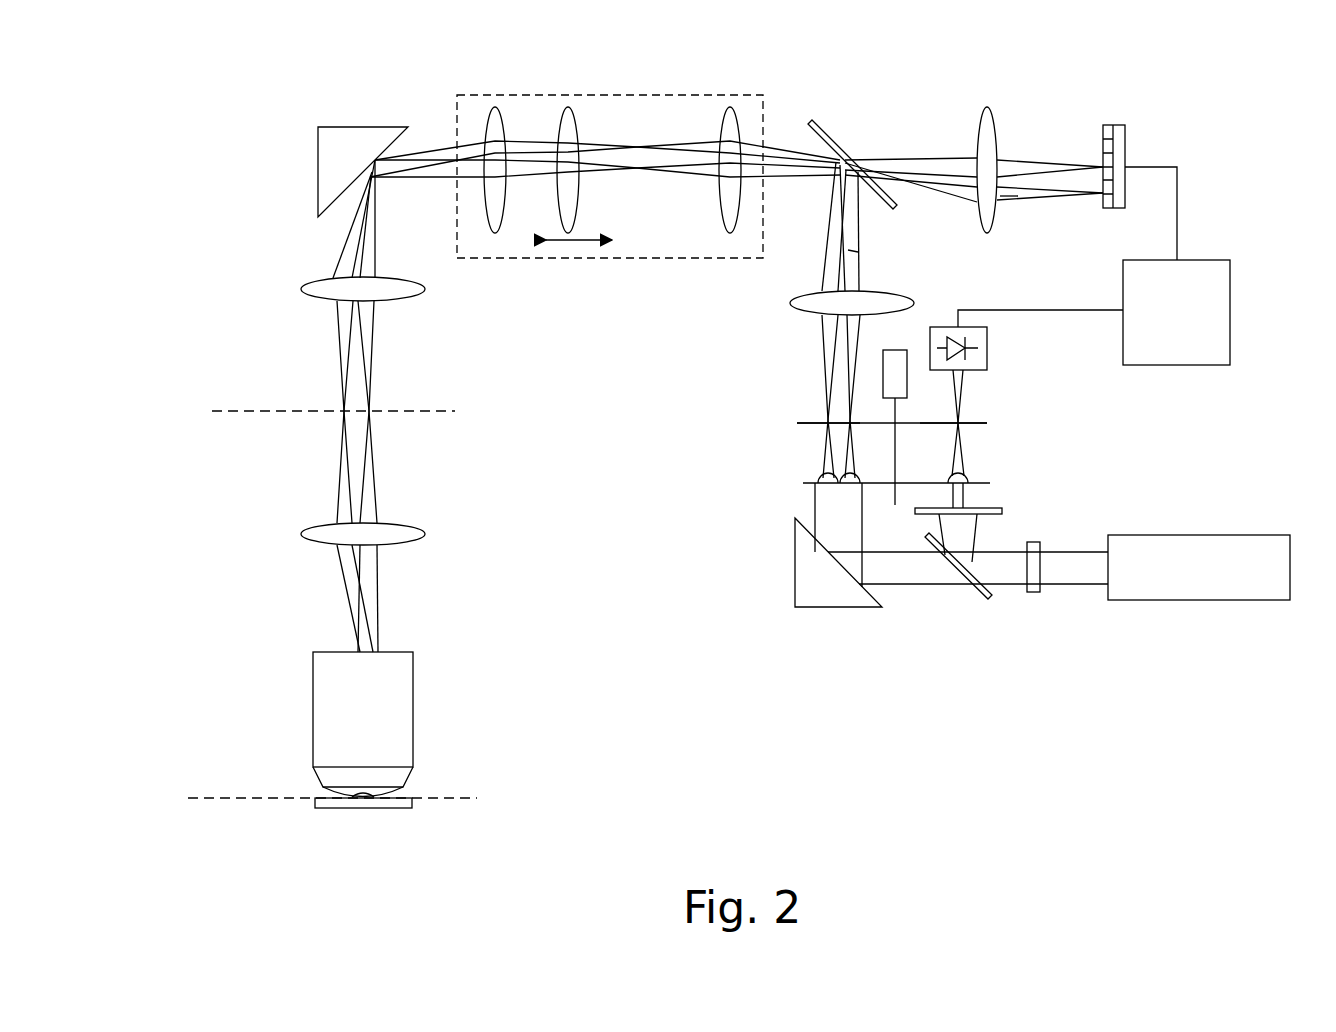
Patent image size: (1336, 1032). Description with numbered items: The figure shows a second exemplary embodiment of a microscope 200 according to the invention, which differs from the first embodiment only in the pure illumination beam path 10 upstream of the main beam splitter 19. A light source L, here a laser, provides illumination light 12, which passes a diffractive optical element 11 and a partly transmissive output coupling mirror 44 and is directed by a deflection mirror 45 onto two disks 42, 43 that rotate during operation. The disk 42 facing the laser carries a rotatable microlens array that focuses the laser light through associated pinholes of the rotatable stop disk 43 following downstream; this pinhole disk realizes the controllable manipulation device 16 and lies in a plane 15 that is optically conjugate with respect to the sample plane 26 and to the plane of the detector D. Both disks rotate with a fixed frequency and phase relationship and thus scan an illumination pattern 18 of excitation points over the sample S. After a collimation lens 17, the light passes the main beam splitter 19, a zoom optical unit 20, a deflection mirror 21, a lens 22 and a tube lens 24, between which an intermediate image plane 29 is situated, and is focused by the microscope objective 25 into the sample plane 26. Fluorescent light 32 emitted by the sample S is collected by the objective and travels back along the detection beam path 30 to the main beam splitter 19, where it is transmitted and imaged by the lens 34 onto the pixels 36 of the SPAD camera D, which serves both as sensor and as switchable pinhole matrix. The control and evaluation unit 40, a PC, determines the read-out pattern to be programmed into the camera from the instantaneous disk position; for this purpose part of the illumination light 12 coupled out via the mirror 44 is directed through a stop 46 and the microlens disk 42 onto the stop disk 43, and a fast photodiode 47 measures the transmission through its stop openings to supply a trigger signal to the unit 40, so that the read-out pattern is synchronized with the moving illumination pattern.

The illumination beam path 10 is at (798, 268).
The diffractive optical element 11 is at (1033, 592).
The illumination light 12 is at (903, 572).
The plane that is optically conjugate with respect to the sample plane 15 is at (797, 423).
The controllable manipulation device 16 is at (804, 414).
The collimation lens 17 is at (790, 303).
The illumination pattern 18 is at (848, 250).
The main beam splitter 19 is at (822, 135).
The zoom optical unit 20 is at (628, 95).
The deflection mirror 21 is at (358, 135).
The lens 22 is at (303, 290).
The tube lens 24 is at (303, 534).
The microscope objective 25 is at (405, 695).
The sample plane 26 is at (215, 797).
The intermediate image plane 29 is at (230, 414).
The detection beam path 30 is at (935, 112).
The fluorescent light emitted by sample S 32 is at (1018, 196).
The lens 34 is at (990, 135).
The pixel of the detector 36 is at (1110, 125).
The control and evaluation unit 40 is at (1176, 312).
The rotatable microlens array 42 is at (803, 483).
The rotatable stop disk 43 is at (987, 423).
The output coupling mirror 44 is at (985, 598).
The deflection mirror 45 is at (823, 595).
The stop 46 is at (990, 483).
The photodiode 47 is at (980, 355).
The microscope according to the invention 200 is at (628, 645).
The detector D is at (1120, 143).
The light source L is at (1199, 567).
The sample S is at (338, 808).